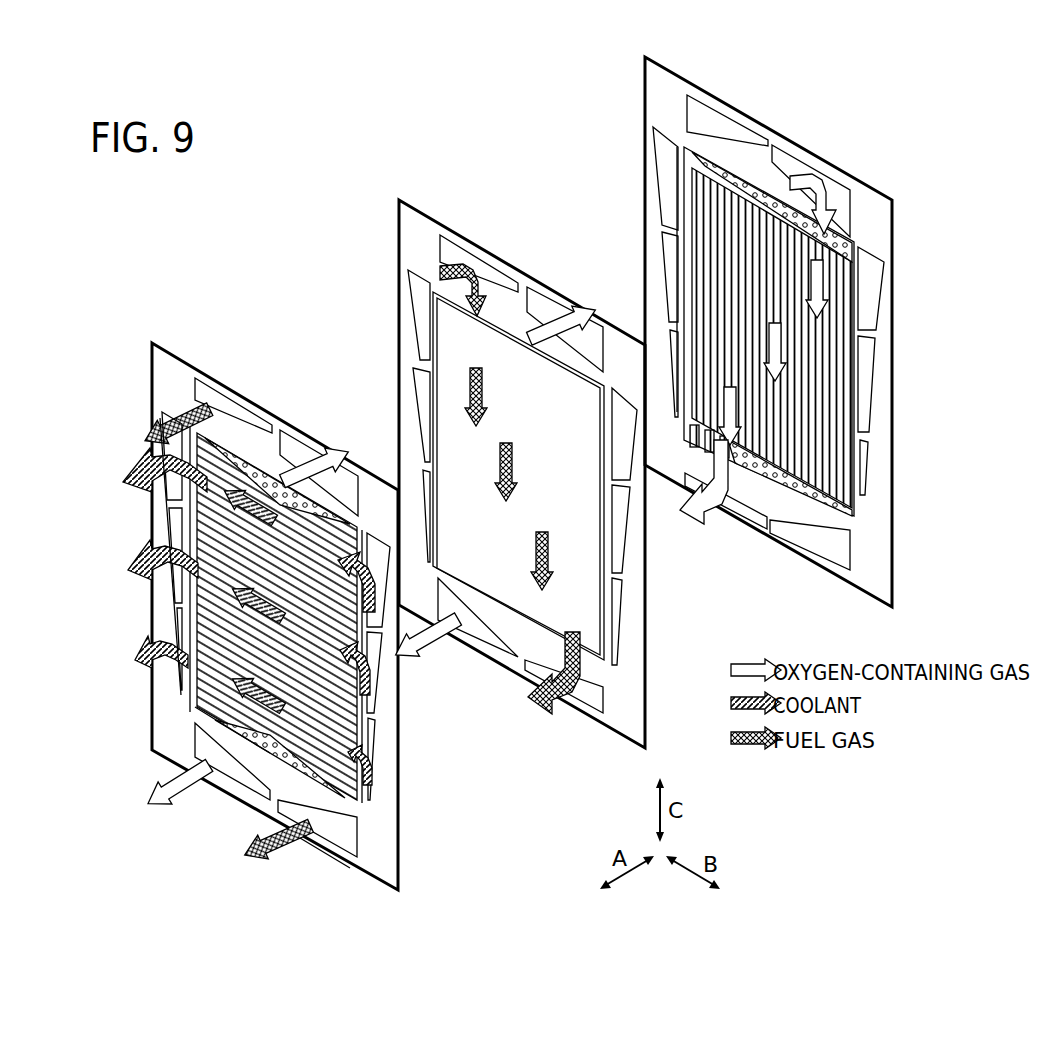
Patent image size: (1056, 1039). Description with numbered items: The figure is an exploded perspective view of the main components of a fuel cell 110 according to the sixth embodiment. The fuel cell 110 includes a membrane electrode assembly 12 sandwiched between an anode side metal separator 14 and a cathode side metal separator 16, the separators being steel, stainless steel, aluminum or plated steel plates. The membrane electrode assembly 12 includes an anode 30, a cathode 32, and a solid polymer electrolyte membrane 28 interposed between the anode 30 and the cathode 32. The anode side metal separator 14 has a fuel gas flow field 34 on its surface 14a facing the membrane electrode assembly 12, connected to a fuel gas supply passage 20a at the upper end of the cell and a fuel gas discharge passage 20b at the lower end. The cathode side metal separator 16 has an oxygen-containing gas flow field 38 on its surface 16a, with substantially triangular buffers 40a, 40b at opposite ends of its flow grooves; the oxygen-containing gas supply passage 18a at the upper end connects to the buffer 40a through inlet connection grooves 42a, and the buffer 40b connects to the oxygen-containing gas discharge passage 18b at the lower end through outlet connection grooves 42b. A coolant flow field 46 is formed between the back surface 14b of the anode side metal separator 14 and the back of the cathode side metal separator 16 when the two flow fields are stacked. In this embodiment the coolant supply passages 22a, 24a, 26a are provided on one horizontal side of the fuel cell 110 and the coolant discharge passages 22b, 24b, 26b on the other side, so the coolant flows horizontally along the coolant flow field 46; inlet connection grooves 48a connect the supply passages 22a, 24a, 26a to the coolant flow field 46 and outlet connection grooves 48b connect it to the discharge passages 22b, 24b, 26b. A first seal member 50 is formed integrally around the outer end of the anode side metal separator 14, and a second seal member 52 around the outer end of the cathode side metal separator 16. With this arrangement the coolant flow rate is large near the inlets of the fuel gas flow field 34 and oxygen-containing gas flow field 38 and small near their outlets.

The fuel cell 110 is at (129, 248).
The membrane electrode assembly 12 is at (397, 198).
The anode side metal separator 14 is at (150, 341).
The surface of anode side metal separator 14a is at (392, 878).
The surface of anode side metal separator 14b is at (345, 858).
The cathode side metal separator 16 is at (643, 56).
The surface of cathode side metal separator 16a is at (872, 602).
The oxygen-containing gas supply passage 18a is at (305, 445).
The oxygen-containing gas discharge passage 18b is at (235, 775).
The fuel gas supply passage 20a is at (252, 412).
The fuel gas discharge passage 20b is at (348, 838).
The coolant supply passage 22a is at (377, 535).
The coolant discharge passage 22b is at (162, 440).
The coolant supply passage 24a is at (378, 647).
The coolant discharge passage 24b is at (175, 530).
The coolant supply passage 26a is at (385, 727).
The coolant discharge passage 26b is at (178, 620).
The solid polymer electrolyte membrane 28 is at (624, 745).
The anode 30 is at (437, 319).
The cathode 32 is at (430, 352).
The fuel gas flow field 34 is at (180, 590).
The oxygen-containing gas flow field 38 is at (700, 330).
The buffer 40a is at (745, 150).
The buffer 40b is at (780, 527).
The inlet connection grooves 42a is at (790, 165).
The outlet connection grooves 42b is at (738, 492).
The coolant flow field 46 is at (270, 670).
The inlet connection grooves 48a is at (872, 470).
The outlet connection grooves 48b is at (668, 215).
The first seal member 50 is at (237, 780).
The second seal member 52 is at (643, 100).